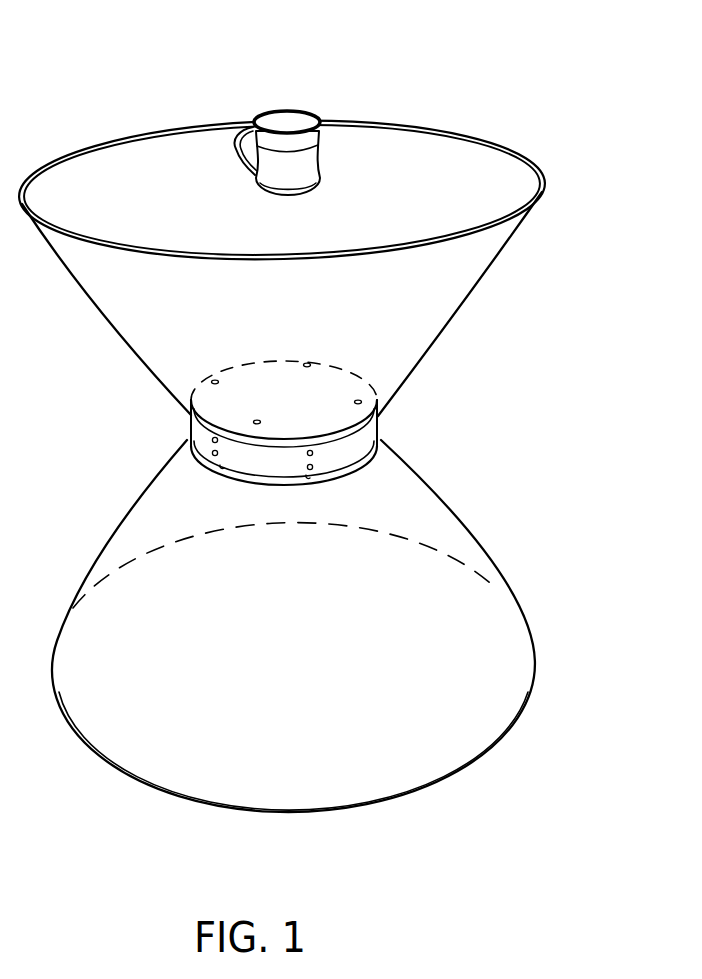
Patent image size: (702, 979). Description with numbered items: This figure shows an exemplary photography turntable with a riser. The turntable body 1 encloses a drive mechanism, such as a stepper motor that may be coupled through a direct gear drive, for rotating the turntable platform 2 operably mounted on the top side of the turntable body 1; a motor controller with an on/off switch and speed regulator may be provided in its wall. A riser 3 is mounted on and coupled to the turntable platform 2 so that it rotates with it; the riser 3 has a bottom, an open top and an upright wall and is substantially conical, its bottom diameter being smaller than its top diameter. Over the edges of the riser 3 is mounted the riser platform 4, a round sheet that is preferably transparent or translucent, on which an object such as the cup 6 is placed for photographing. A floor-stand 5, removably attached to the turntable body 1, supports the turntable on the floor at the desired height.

The turntable body 1 is at (375, 430).
The turntable platform 2 is at (318, 385).
The riser 3 is at (481, 279).
The riser platform 4 is at (463, 158).
The floor-stand 5 is at (465, 533).
The cup 6 is at (298, 117).